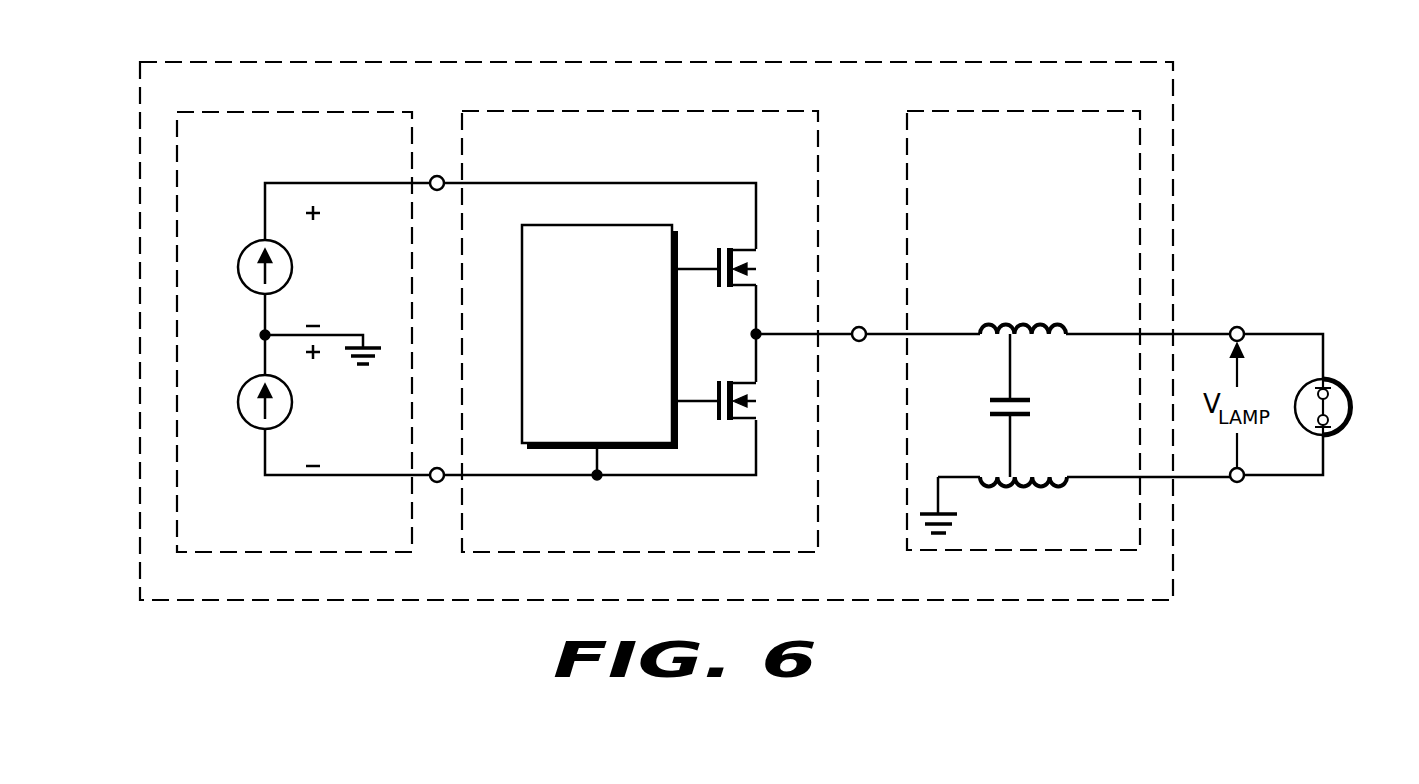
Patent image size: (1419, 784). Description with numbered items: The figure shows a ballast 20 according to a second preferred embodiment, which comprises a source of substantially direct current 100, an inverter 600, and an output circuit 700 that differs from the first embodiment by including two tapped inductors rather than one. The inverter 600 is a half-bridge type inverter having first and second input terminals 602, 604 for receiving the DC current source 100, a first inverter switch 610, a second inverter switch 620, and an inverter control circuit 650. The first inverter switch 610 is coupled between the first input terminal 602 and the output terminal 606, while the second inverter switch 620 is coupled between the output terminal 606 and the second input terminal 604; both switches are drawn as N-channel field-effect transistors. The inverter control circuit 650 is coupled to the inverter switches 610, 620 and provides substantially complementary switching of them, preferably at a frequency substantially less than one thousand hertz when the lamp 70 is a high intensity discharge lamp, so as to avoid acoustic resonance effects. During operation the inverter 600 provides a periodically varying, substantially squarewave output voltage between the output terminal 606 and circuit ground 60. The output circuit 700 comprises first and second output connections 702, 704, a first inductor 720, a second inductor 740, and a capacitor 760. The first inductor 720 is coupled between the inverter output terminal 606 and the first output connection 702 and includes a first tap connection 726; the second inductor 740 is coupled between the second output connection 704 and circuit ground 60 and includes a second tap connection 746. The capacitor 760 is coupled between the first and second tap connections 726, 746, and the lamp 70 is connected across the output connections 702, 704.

The ballast 20 is at (640, 62).
The source of substantially direct current 100 is at (277, 112).
The inverter 600 is at (655, 111).
The output circuit 700 is at (1007, 111).
The first input terminal 602 is at (437, 176).
The second input terminal 604 is at (437, 482).
The output terminal 606 is at (858, 327).
The inverter control circuit 650 is at (595, 225).
The first inverter switch 610 is at (752, 268).
The second inverter switch 620 is at (752, 400).
The circuit ground 60 is at (345, 335).
The first inductor 720 is at (1028, 316).
The first tap connection 726 is at (1011, 370).
The capacitor 760 is at (993, 398).
The second tap connection 746 is at (1011, 445).
The second inductor 740 is at (1027, 492).
The first output connection 702 is at (1240, 327).
The second output connection 704 is at (1237, 483).
The lamp 70 is at (1350, 427).